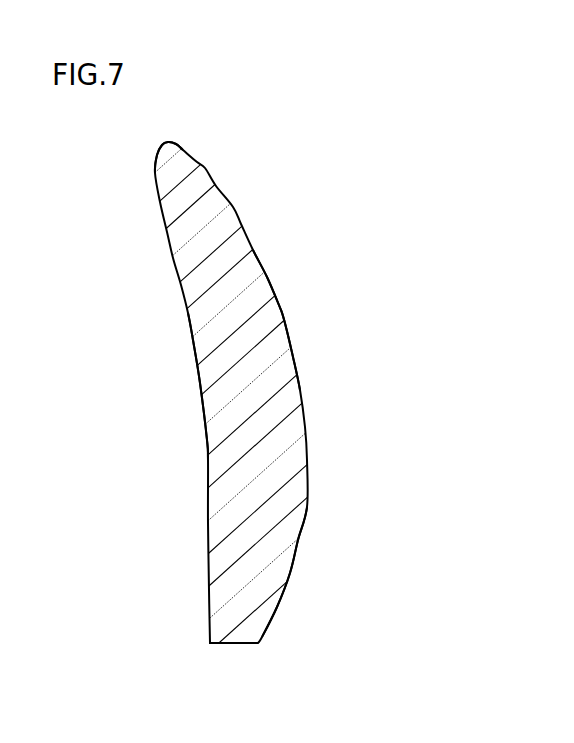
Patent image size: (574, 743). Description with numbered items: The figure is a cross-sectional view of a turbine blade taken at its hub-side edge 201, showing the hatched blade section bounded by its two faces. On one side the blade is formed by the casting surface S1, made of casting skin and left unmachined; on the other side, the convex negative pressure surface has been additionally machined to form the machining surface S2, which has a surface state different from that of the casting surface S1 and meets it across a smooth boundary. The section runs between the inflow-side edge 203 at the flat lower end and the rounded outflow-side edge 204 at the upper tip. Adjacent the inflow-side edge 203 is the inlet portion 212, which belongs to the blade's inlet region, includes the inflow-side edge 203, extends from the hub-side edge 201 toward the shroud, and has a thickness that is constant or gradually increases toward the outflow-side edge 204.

The hub-side edge 201 is at (275, 433).
The inflow-side edge 203 is at (230, 645).
The outflow-side edge 204 is at (167, 140).
The inlet portion 212 is at (282, 575).
The casting surface S1 is at (200, 383).
The machining surface S2 is at (282, 310).